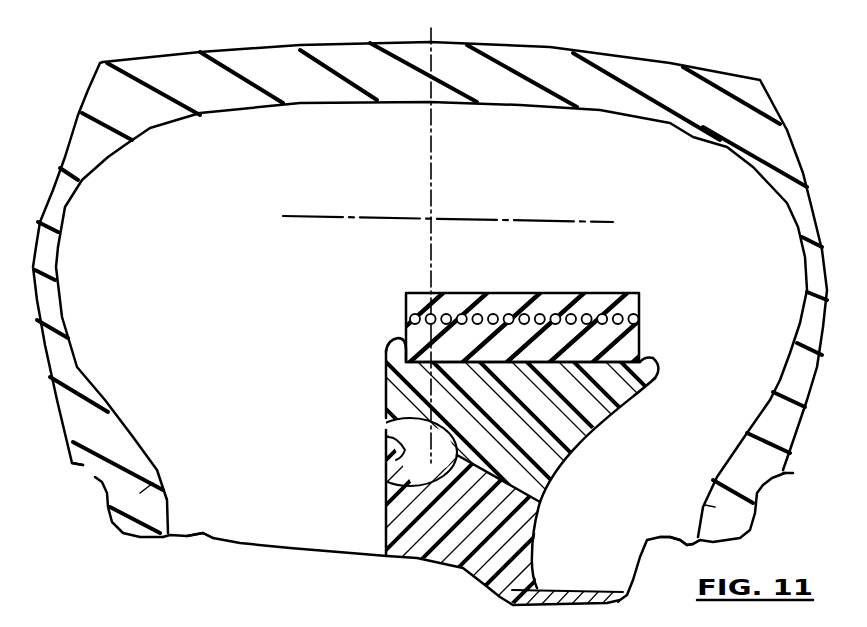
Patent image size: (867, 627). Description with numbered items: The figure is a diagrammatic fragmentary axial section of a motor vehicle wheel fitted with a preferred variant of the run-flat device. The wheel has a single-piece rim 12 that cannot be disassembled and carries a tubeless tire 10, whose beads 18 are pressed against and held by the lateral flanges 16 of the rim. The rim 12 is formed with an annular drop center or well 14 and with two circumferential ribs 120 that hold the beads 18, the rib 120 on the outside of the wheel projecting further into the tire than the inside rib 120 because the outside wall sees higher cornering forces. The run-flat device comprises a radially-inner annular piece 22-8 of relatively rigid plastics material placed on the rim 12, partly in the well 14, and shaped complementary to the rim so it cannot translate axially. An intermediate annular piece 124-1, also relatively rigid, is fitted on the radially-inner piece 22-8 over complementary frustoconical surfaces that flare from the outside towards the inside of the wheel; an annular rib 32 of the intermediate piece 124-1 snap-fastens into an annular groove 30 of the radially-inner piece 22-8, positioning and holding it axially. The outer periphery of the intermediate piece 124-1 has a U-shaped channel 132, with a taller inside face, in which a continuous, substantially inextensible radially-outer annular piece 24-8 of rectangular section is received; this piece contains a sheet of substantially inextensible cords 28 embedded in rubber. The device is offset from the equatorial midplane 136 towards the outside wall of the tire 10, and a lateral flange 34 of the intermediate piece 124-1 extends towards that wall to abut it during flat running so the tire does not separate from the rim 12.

The tire 10 is at (182, 53).
The rim 12 is at (300, 556).
The well 14 is at (500, 605).
The lateral flanges 16 is at (95, 477).
The beads 18 is at (157, 478).
The circumferential ribs 120 is at (203, 533).
The equatorial midplane 136 is at (433, 180).
The radially-outer annular piece 24-8 is at (402, 288).
The cords 28 is at (485, 315).
The channel 132 is at (384, 348).
The intermediate annular piece 124-1 is at (382, 394).
The annular rib 32 is at (387, 422).
The annular groove 30 is at (388, 479).
The radially-inner annular piece 22-8 is at (376, 518).
The lateral flange 34 is at (655, 365).